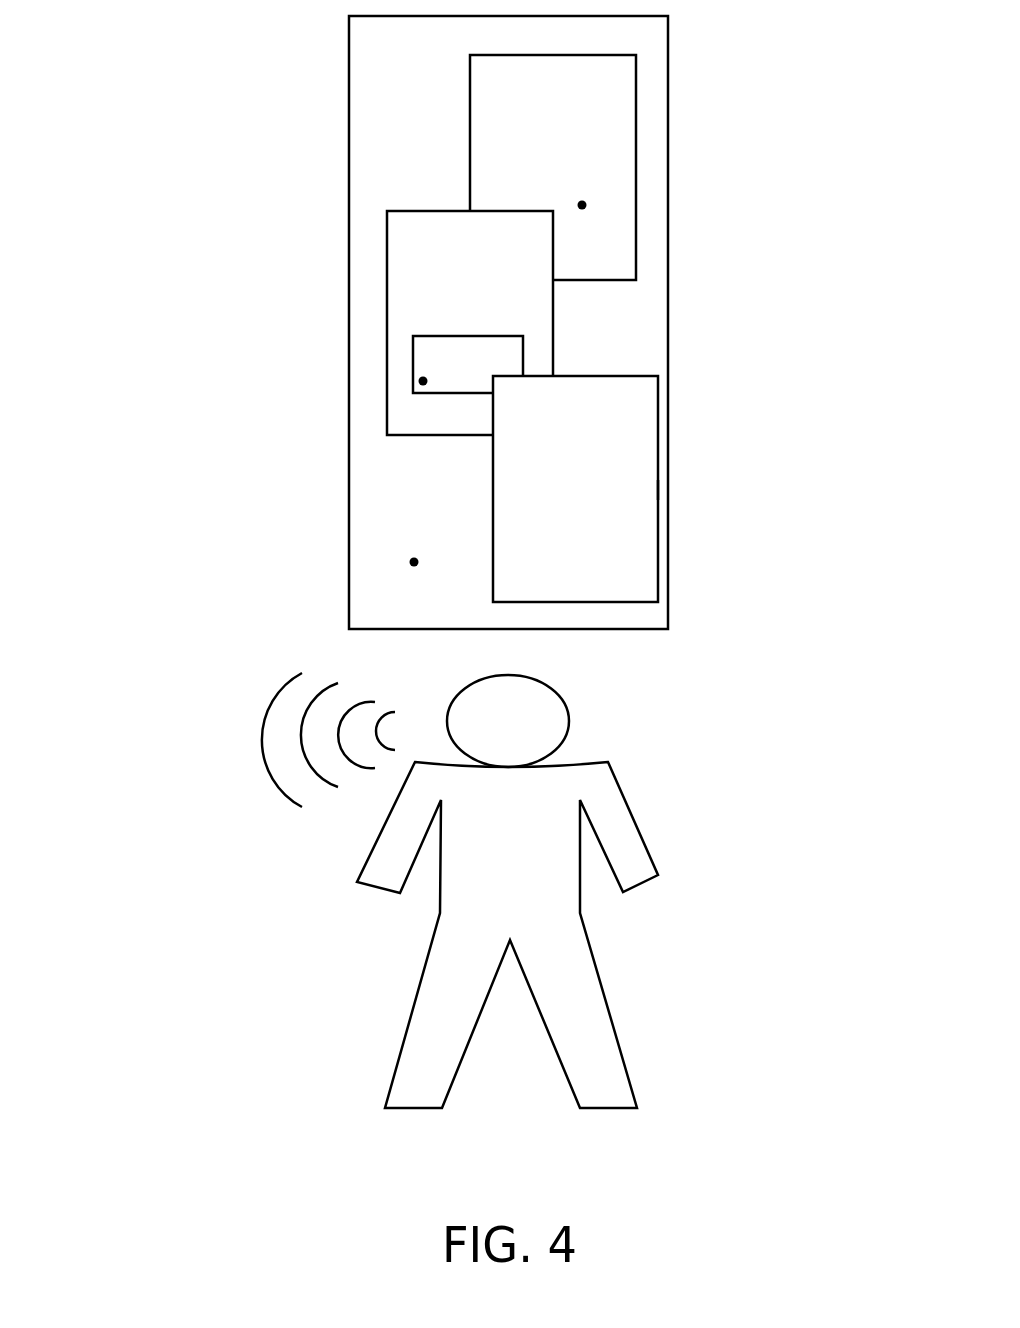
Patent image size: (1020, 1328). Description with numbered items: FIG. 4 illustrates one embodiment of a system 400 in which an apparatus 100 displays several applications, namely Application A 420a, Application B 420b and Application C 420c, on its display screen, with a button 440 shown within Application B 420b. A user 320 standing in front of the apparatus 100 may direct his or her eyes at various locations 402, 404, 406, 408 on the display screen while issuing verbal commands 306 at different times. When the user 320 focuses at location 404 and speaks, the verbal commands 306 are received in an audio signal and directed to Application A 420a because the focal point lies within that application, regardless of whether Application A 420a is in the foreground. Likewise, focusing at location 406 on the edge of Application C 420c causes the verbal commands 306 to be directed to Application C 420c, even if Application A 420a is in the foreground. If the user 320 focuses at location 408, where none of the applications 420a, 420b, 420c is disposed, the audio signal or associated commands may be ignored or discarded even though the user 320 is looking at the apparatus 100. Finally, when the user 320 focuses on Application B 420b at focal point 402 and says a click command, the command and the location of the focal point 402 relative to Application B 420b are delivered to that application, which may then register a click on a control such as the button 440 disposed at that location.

The system / operating environment 400 is at (150, 74).
The apparatus 100 is at (335, 186).
The Application A 420a is at (524, 149).
The Application B 420b is at (441, 304).
The Application C 420c is at (545, 470).
The button 440 is at (468, 364).
The focal point 402 is at (405, 375).
The location 404 is at (604, 197).
The location 406 is at (658, 490).
The location 408 is at (396, 556).
The verbal commands 306 is at (290, 726).
The user 320 is at (507, 907).